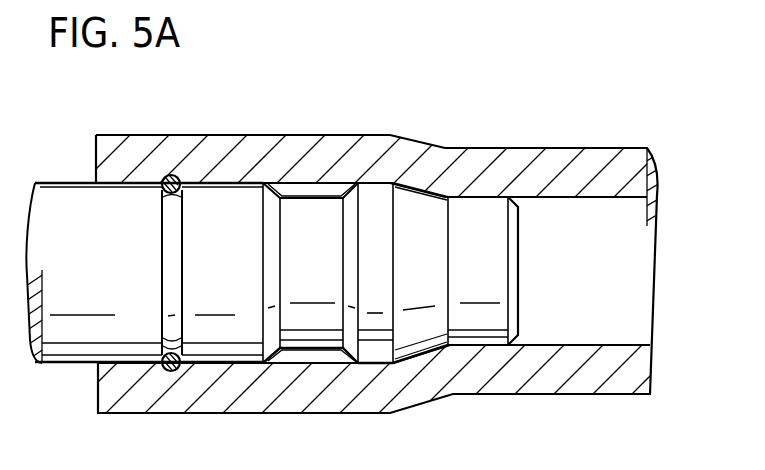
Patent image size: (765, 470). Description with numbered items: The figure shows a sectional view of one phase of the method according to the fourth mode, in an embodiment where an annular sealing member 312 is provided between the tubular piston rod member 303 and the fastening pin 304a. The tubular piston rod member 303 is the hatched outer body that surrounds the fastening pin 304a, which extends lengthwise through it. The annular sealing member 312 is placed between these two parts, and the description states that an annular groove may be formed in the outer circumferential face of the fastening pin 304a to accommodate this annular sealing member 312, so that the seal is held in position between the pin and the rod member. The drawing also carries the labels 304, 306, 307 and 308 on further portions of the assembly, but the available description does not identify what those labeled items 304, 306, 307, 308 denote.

The tubular piston rod member 303 is at (595, 168).
The pipe 304 is at (50, 197).
The fastening pin 304a is at (148, 187).
The annular groove 306 is at (308, 200).
The pipe end portion 307 is at (497, 255).
The conical transition 308 is at (427, 190).
The annular sealing member 312 is at (160, 200).